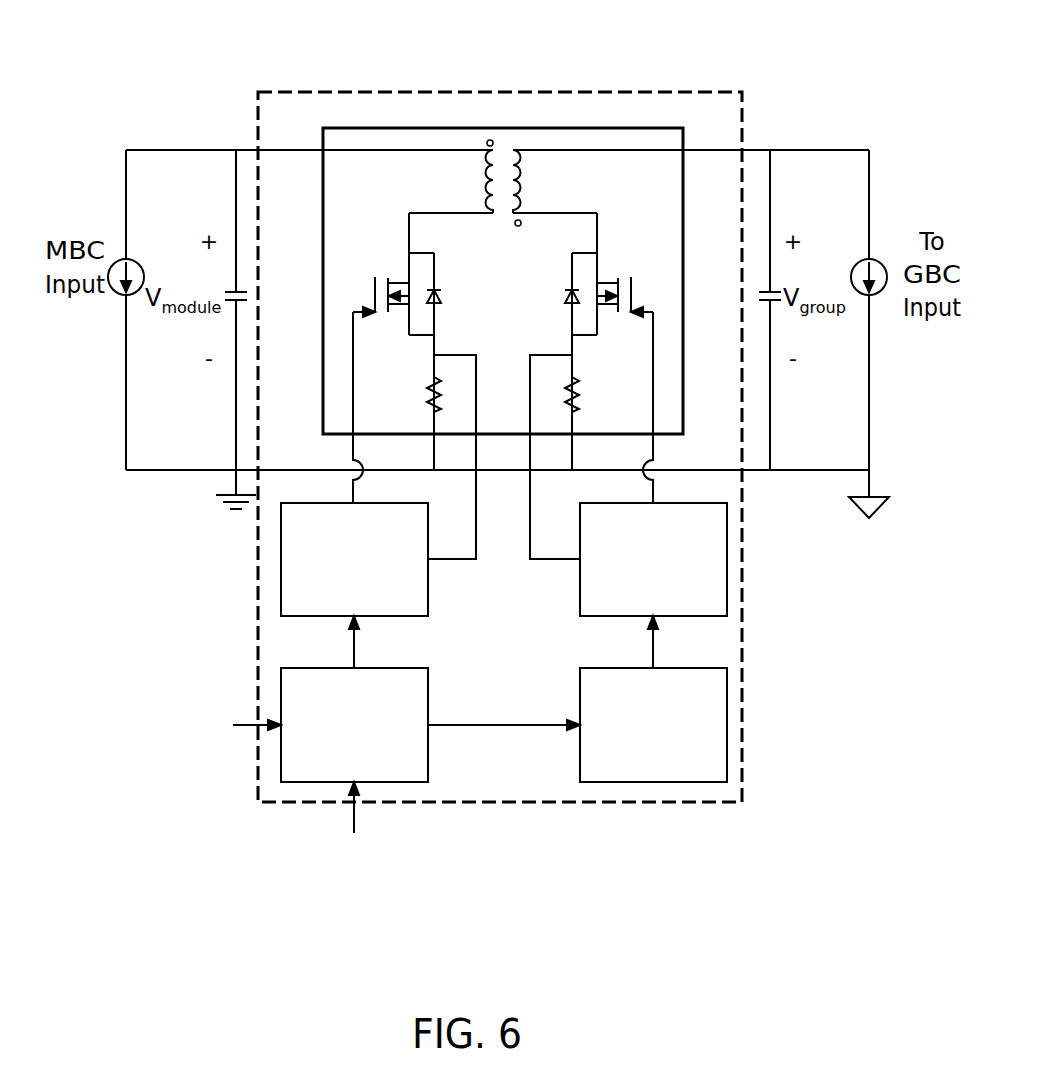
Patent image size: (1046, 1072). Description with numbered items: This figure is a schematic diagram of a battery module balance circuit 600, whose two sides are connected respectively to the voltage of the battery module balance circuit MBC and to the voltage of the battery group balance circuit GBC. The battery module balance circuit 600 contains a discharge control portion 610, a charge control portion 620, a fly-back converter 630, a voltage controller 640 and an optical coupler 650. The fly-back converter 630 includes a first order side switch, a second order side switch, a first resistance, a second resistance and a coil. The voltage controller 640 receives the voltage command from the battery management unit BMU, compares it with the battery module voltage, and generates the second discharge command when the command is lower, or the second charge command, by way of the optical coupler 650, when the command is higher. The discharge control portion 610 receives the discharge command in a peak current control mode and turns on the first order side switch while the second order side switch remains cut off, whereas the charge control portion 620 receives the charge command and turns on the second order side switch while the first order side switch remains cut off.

The battery module balance circuit 600 is at (422, 92).
The fly-back converter 630 is at (536, 128).
The discharge control portion 610 is at (281, 558).
The charge control portion 620 is at (727, 559).
The voltage controller 640 is at (281, 752).
The optical coupler 650 is at (727, 725).